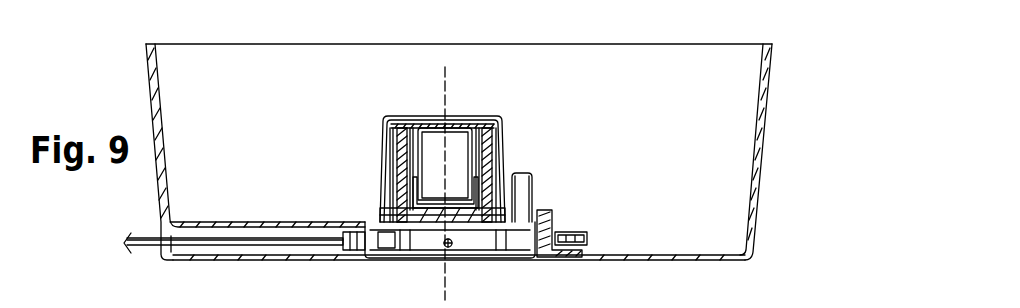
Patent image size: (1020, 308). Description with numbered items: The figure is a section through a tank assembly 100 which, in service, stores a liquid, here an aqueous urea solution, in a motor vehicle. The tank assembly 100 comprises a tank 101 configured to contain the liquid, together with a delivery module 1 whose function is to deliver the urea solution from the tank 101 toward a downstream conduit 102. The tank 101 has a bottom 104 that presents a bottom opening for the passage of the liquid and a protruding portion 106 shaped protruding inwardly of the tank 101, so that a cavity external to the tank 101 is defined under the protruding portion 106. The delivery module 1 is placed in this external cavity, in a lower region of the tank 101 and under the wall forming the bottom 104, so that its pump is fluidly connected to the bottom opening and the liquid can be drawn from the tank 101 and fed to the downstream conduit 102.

The tank assembly 100 is at (790, 110).
The tank 101 is at (758, 204).
The downstream conduit 102 is at (187, 241).
The bottom 104 is at (628, 250).
The protruding portion 106 is at (380, 141).
The delivery module 1 is at (473, 233).